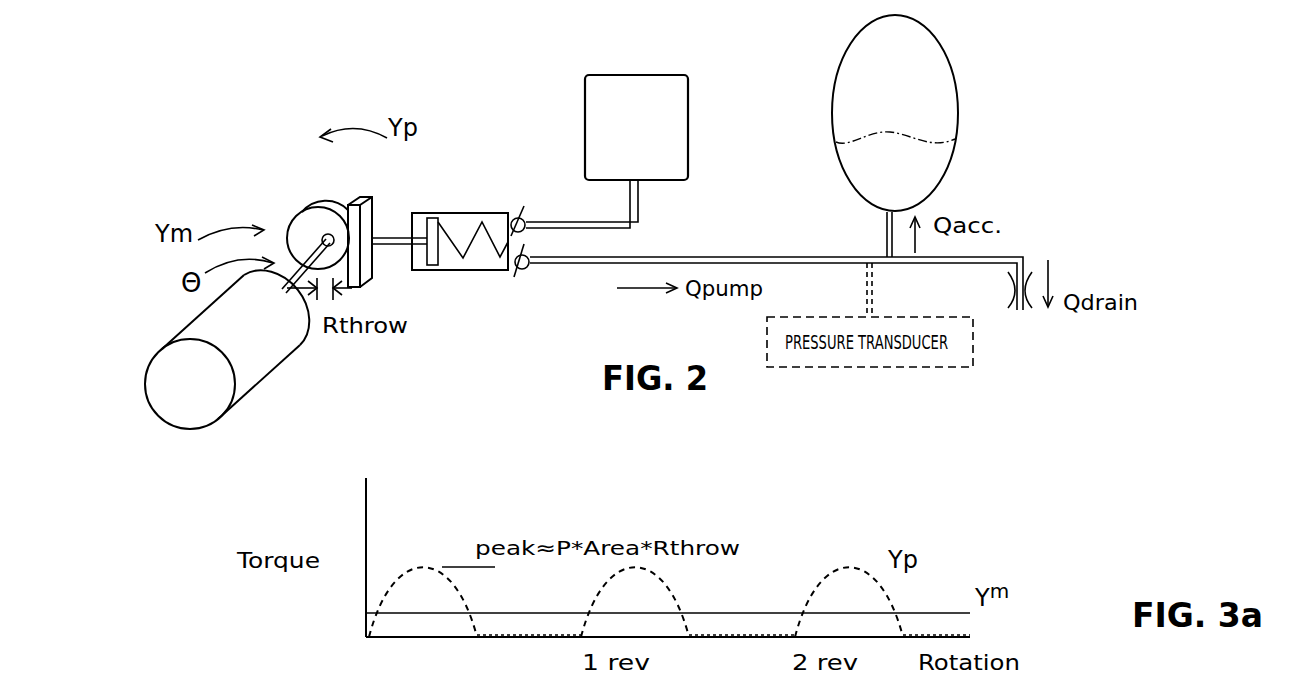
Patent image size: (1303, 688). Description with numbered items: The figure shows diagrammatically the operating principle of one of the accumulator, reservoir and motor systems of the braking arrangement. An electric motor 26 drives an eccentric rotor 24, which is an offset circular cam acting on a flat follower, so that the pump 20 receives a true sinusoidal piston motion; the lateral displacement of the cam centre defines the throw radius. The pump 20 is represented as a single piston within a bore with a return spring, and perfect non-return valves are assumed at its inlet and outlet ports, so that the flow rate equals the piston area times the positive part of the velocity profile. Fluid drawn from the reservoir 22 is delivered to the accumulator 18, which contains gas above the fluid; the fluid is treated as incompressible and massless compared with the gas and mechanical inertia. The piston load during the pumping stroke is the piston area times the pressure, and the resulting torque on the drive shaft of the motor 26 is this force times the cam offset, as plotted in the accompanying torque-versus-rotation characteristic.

The accumulator 18 is at (955, 128).
The pump 20 is at (420, 171).
The reservoir 22 is at (690, 147).
The eccentric rotor 24 is at (293, 222).
The electric motor 26 is at (288, 360).